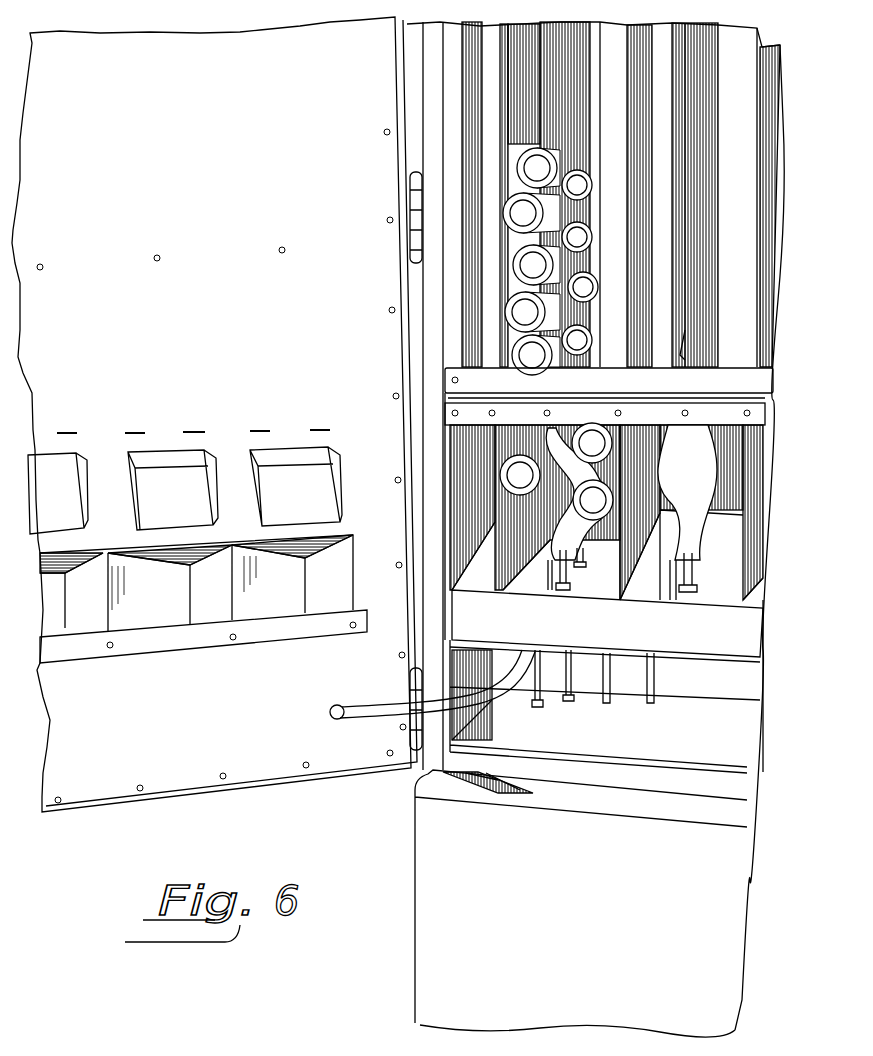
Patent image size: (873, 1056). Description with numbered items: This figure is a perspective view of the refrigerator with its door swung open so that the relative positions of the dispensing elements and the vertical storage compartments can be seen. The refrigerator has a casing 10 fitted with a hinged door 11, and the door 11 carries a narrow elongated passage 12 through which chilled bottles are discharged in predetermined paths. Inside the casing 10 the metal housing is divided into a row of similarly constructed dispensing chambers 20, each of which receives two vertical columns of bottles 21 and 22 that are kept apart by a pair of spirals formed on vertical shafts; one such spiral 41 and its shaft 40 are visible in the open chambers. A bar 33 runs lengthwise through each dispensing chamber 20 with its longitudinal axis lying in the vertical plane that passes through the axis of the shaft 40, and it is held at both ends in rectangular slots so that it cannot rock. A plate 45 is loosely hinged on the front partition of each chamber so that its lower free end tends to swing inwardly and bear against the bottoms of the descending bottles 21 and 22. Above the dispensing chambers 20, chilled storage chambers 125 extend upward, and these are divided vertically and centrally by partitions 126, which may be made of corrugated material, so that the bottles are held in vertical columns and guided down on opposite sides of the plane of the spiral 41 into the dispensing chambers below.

The casing 10 is at (557, 529).
The hinged door 11 is at (214, 414).
The narrow elongated passage 12 is at (216, 634).
The dispensing chambers 20 is at (525, 588).
The bottles 21 is at (541, 536).
The bottles 22 is at (600, 533).
The bar 33 is at (765, 414).
The shaft 40 is at (568, 582).
The spiral 41 is at (548, 592).
The plate 45 is at (262, 460).
The storage chambers 125 is at (575, 148).
The partitions 126 is at (560, 91).